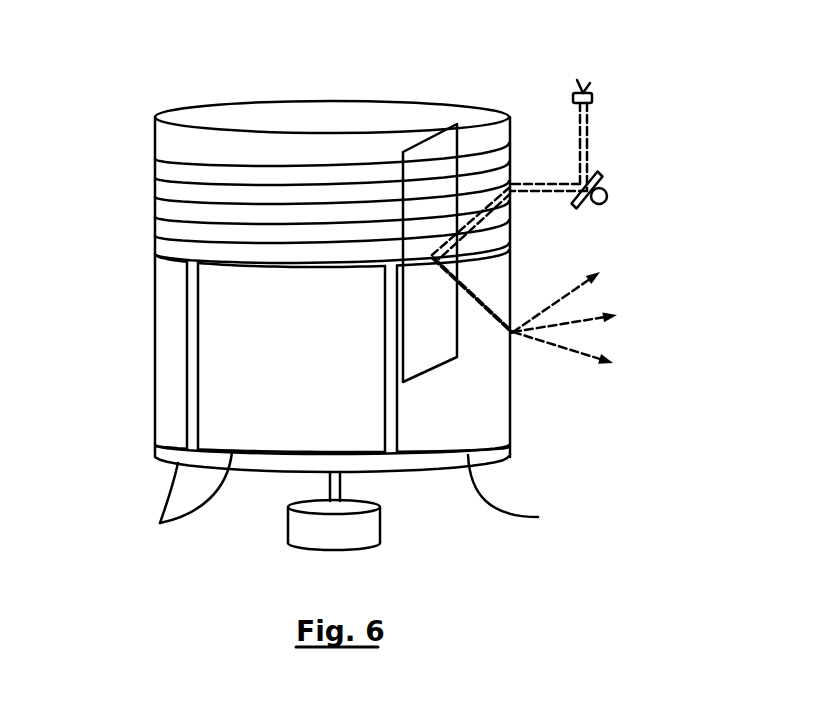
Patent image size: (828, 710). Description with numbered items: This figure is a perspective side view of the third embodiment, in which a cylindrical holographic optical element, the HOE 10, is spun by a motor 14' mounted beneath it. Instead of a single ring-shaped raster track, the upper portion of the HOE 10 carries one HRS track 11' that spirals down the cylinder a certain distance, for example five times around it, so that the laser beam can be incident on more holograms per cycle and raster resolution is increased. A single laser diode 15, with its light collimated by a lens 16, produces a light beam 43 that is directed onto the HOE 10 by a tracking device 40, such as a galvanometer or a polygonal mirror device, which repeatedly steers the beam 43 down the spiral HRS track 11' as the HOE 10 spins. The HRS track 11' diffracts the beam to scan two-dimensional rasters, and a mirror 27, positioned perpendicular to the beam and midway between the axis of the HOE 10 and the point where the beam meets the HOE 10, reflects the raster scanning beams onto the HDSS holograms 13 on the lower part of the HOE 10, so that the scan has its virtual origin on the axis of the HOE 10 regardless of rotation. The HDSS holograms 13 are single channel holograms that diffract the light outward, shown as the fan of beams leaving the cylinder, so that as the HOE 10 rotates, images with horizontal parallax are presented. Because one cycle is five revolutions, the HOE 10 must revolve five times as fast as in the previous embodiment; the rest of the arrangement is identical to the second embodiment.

The holographic optical element (HOE) 10 is at (162, 118).
The spiral HRS track 11' is at (283, 203).
The mirror 27 is at (428, 138).
The laser diode 15 is at (592, 98).
The lens 16 is at (592, 105).
The light beam 43 is at (587, 143).
The tracking device 40 is at (598, 204).
The HDSS holograms 13 is at (349, 495).
The motor 14' is at (373, 530).